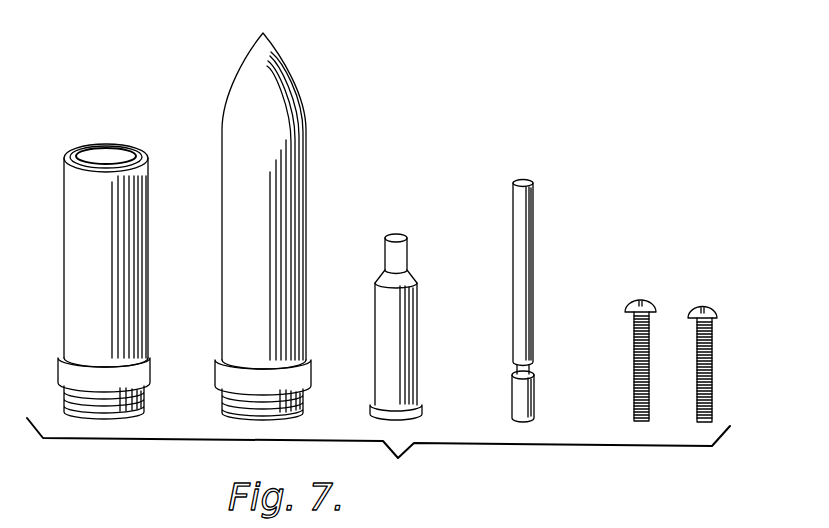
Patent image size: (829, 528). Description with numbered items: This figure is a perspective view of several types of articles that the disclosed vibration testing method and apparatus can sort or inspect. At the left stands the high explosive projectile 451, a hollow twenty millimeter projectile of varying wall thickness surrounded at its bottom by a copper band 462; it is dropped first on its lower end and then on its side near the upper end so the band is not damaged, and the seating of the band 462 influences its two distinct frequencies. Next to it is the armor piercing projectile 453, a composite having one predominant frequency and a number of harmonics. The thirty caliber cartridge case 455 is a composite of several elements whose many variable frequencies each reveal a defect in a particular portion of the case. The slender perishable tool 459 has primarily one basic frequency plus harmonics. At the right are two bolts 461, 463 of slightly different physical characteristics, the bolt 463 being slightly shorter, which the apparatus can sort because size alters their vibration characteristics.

The high explosive projectile 451 is at (80, 148).
The copper band 462 is at (149, 378).
The armor piercing projectile 453 is at (284, 58).
The cartridge case 455 is at (406, 245).
The perishable tool 459 is at (535, 184).
The bolt 461 is at (633, 323).
The bolt 463 is at (712, 332).